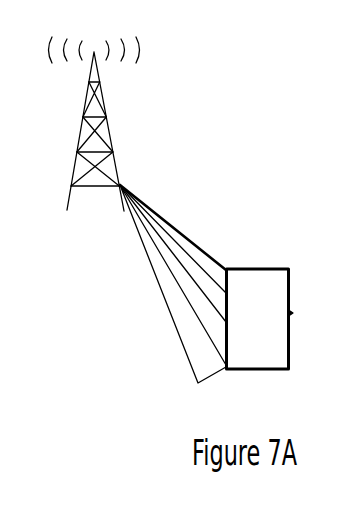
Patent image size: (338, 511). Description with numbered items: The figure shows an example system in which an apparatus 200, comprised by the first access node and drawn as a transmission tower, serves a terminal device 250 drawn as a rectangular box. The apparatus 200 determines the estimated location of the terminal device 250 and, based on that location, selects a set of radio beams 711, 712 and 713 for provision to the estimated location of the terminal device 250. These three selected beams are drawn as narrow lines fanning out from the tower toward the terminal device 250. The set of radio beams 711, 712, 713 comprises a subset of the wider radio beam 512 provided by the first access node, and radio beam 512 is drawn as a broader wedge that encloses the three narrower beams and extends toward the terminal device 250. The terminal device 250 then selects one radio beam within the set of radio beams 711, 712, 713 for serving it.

The apparatus 200 is at (75, 157).
The radio beam 711 is at (178, 220).
The radio beam 712 is at (193, 244).
The radio beam 713 is at (199, 289).
The radio beam 512 is at (217, 356).
The terminal device 250 is at (272, 333).